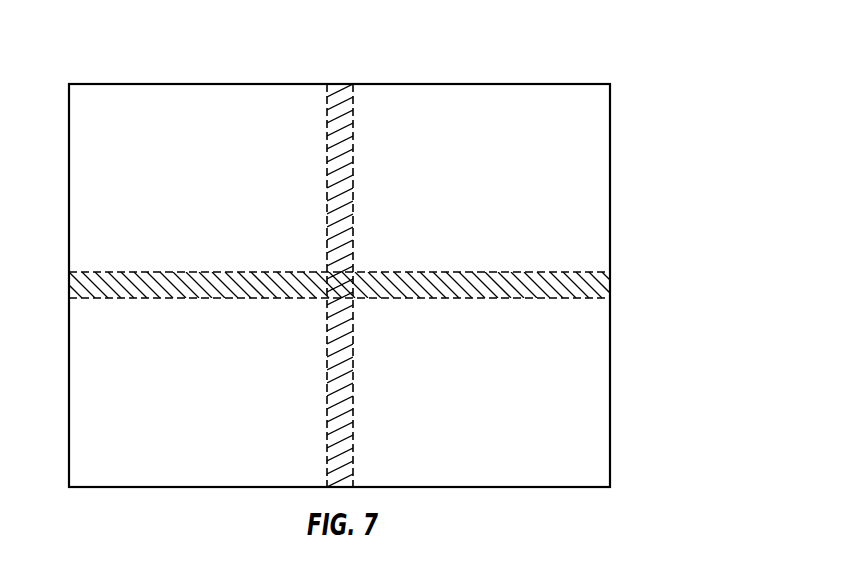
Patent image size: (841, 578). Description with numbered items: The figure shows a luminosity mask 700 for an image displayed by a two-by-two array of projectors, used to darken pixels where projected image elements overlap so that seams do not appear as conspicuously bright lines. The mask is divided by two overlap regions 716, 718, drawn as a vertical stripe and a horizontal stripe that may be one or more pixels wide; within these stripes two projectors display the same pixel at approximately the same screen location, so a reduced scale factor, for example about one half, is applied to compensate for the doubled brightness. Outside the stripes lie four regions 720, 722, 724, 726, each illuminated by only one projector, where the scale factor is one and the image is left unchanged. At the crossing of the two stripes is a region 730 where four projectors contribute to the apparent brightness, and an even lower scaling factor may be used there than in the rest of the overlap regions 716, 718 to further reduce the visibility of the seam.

The luminosity mask 700 is at (727, 138).
The overlap region 716 is at (353, 81).
The overlap region 718 is at (618, 272).
The region 720 is at (215, 190).
The region 722 is at (495, 190).
The region 724 is at (215, 396).
The region 726 is at (495, 396).
The region 730 is at (342, 286).